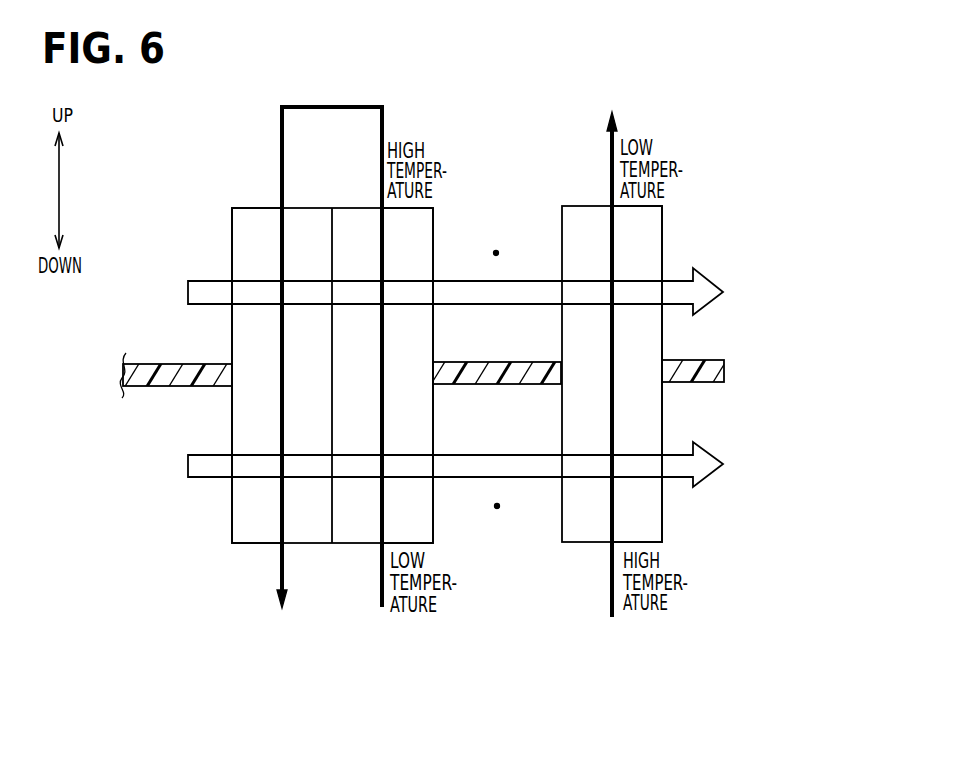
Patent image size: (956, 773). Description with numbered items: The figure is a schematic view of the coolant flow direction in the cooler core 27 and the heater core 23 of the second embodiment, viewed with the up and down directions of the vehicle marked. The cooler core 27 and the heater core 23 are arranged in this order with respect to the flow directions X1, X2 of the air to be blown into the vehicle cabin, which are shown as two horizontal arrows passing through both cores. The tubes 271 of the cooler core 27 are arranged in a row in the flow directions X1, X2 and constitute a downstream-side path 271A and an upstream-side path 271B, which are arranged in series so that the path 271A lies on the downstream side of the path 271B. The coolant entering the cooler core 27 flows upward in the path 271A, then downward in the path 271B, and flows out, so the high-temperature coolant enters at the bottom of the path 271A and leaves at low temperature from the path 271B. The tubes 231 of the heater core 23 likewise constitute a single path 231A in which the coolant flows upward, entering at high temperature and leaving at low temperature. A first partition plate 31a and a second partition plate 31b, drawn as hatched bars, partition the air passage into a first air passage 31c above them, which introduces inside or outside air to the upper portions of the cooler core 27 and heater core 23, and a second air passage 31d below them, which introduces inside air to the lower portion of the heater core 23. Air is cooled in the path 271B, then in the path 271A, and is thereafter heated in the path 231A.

The cooler core 27 is at (263, 207).
The tube 271 is at (326, 333).
The path 271A is at (433, 245).
The path 271B is at (230, 247).
The heater core 23 is at (592, 206).
The tube 231 is at (702, 340).
The path 231A is at (662, 247).
The first partition plate 31a is at (197, 388).
The second partition plate 31b is at (472, 385).
The first air passage 31c is at (496, 253).
The second air passage 31d is at (497, 506).
The flow direction X1 is at (705, 477).
The flow direction X2 is at (708, 273).